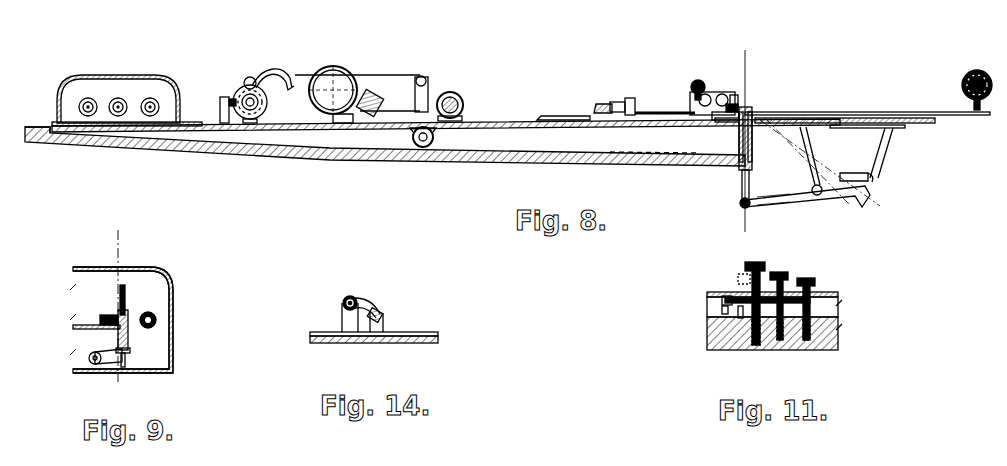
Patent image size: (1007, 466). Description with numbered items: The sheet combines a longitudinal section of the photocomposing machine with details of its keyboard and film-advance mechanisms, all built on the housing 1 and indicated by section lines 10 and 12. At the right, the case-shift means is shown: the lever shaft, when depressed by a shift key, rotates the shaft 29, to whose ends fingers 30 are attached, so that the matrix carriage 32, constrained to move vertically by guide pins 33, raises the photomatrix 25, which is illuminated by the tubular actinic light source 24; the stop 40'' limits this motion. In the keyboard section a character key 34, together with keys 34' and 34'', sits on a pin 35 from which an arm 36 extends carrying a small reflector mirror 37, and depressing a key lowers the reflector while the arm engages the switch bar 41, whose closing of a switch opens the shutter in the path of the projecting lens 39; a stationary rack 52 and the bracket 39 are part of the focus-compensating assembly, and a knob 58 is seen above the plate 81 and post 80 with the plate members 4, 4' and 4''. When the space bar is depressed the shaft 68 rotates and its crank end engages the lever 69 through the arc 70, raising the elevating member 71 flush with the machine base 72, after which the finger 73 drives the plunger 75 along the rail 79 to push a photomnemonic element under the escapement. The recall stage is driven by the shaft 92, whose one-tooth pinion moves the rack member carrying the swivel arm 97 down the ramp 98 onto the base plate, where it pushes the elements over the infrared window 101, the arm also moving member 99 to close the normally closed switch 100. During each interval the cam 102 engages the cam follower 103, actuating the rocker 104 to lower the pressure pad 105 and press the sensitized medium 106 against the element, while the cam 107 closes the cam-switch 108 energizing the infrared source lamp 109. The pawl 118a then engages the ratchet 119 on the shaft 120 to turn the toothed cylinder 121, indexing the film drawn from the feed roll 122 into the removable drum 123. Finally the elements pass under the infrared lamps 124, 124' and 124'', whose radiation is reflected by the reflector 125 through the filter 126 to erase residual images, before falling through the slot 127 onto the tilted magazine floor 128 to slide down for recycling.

In FIG. 9, the housing 1 is at (173, 338).
In FIG. 8, the photomnemonic element 4 is at (718, 129).
In FIG. 8, the photomnemonic element 4' is at (762, 137).
In FIG. 8, the plate member 4'' is at (725, 137).
In FIG. 9, the section line 10- 10 is at (118, 233).
In FIG. 8, the section line 12- 12 is at (735, 53).
In FIG. 9, the tubular source of actinic light 24 is at (157, 316).
In FIG. 9, the photomatrix 25 is at (129, 340).
In FIG. 9, the shaft 29 is at (89, 358).
In FIG. 9, the finger 30 is at (112, 352).
In FIG. 9, the matrix carriage 32 is at (128, 314).
In FIG. 9, the guide pin 33 is at (126, 292).
In FIG. 11, the character key 34 is at (761, 295).
In FIG. 11, the bolt 34' is at (789, 297).
In FIG. 11, the bolt 34'' is at (819, 300).
In FIG. 11, the pin 35 is at (740, 282).
In FIG. 11, the arm 36 is at (736, 292).
In FIG. 11, the reflector mirror 37 is at (714, 305).
In FIG. 8, the projecting lens 39 is at (740, 95).
In FIG. 9, the stop block 40'' is at (96, 310).
In FIG. 11, the switch bar 41 is at (712, 333).
In FIG. 8, the stationary rack 52 is at (738, 106).
In FIG. 8, the knob 58 is at (703, 93).
In FIG. 8, the shaft 68 is at (870, 175).
In FIG. 8, the lever 69 is at (800, 204).
In FIG. 8, the arc 70 is at (816, 165).
In FIG. 8, the elevating member 71 is at (739, 203).
In FIG. 8, the machine base 72 is at (488, 122).
In FIG. 8, the finger 73 is at (886, 130).
In FIG. 8, the plunger 75 is at (760, 124).
In FIG. 8, the rail 79 is at (770, 112).
In FIG. 8, the post 80 is at (748, 107).
In FIG. 8, the block 81 is at (733, 120).
In FIG. 8, the shaft 92 is at (258, 101).
In FIG. 8, the swivel arm 97 is at (604, 104).
In FIG. 8, the ramp 98 is at (588, 115).
In FIG. 8, the member 99 is at (562, 116).
In FIG. 8, the switch 100 is at (636, 103).
In FIG. 8, the infrared window 101 is at (462, 114).
In FIG. 8, the cam 102 is at (262, 108).
In FIG. 8, the cam follower 103 is at (246, 78).
In FIG. 8, the rocker 104 is at (278, 68).
In FIG. 8, the pressure pad 105 is at (441, 96).
In FIG. 8, the sensitized medium 106 is at (381, 103).
In FIG. 8, the cam 107 is at (233, 98).
In FIG. 8, the cam-switch 108 is at (220, 99).
In FIG. 8, the infrared source lamp 109 is at (433, 138).
In FIG. 14, the pawl 118a is at (354, 297).
In FIG. 14, the ratchet 119 is at (380, 314).
In FIG. 14, the shaft 120 is at (383, 318).
In FIG. 8, the toothed cylinder 121 is at (420, 76).
In FIG. 8, the feed roll 122 is at (460, 98).
In FIG. 8, the drum 123 is at (335, 68).
In FIG. 8, the infrared source lamp 124 is at (101, 86).
In FIG. 8, the infrared source lamp 124' is at (133, 86).
In FIG. 8, the infrared source lamp 124'' is at (166, 86).
In FIG. 8, the reflector 125 is at (60, 80).
In FIG. 8, the infrared transmitting filter 126 is at (65, 120).
In FIG. 8, the slot 127 is at (50, 125).
In FIG. 8, the tilted magazine floor 128 is at (485, 157).